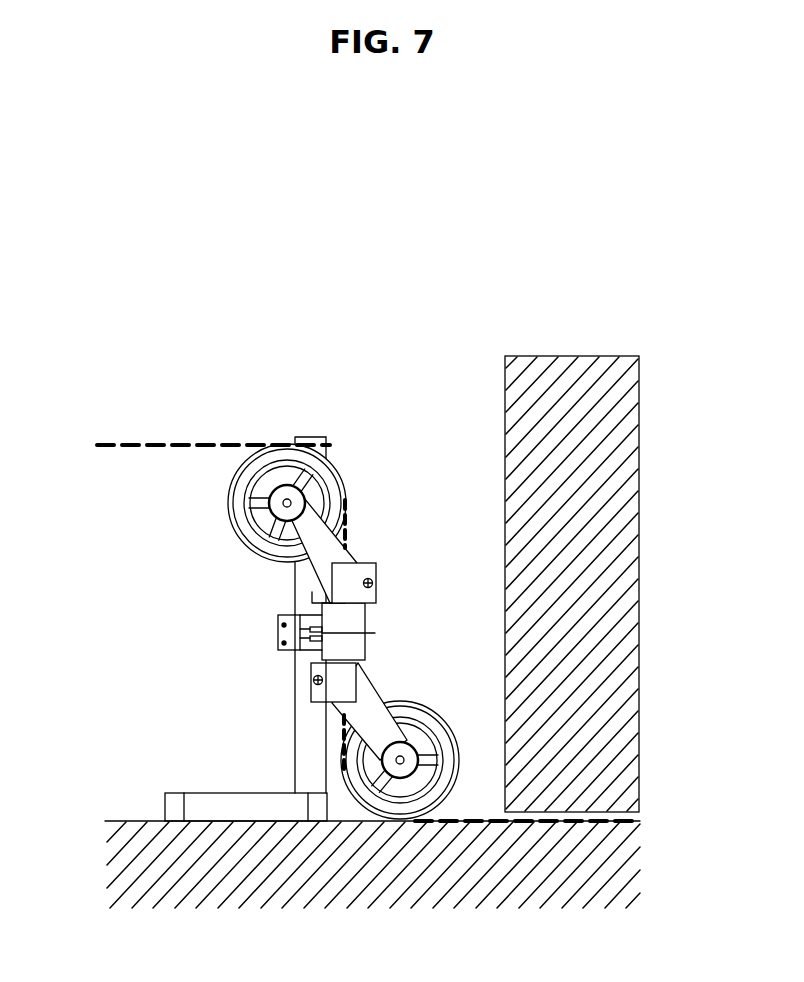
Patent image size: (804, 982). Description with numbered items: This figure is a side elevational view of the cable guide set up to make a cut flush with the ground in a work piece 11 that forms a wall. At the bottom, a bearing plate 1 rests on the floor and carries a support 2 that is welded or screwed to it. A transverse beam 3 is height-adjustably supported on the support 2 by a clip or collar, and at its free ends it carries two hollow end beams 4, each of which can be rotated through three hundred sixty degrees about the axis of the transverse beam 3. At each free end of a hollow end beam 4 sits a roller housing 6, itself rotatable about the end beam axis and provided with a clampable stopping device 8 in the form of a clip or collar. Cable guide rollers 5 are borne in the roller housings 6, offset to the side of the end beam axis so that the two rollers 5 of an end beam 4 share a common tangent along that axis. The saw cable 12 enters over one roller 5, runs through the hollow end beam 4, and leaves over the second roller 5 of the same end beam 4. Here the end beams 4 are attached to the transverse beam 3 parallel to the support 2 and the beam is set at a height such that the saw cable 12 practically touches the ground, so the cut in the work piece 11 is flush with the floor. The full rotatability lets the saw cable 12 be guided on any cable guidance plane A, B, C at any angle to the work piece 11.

The bearing plate 1 is at (212, 805).
The support 2 is at (310, 749).
The transverse beam 3 is at (283, 627).
The hollow end beams 4 is at (322, 645).
The cable guide rollers 5 is at (340, 738).
The roller housing 6 is at (293, 526).
The clampable stopping device 8 is at (372, 585).
The work piece 11 is at (592, 503).
The saw cable 12 is at (225, 445).
The cable guidance plane A is at (170, 443).
The cable guidance plane B is at (533, 822).
The cable guidance plane C is at (347, 522).